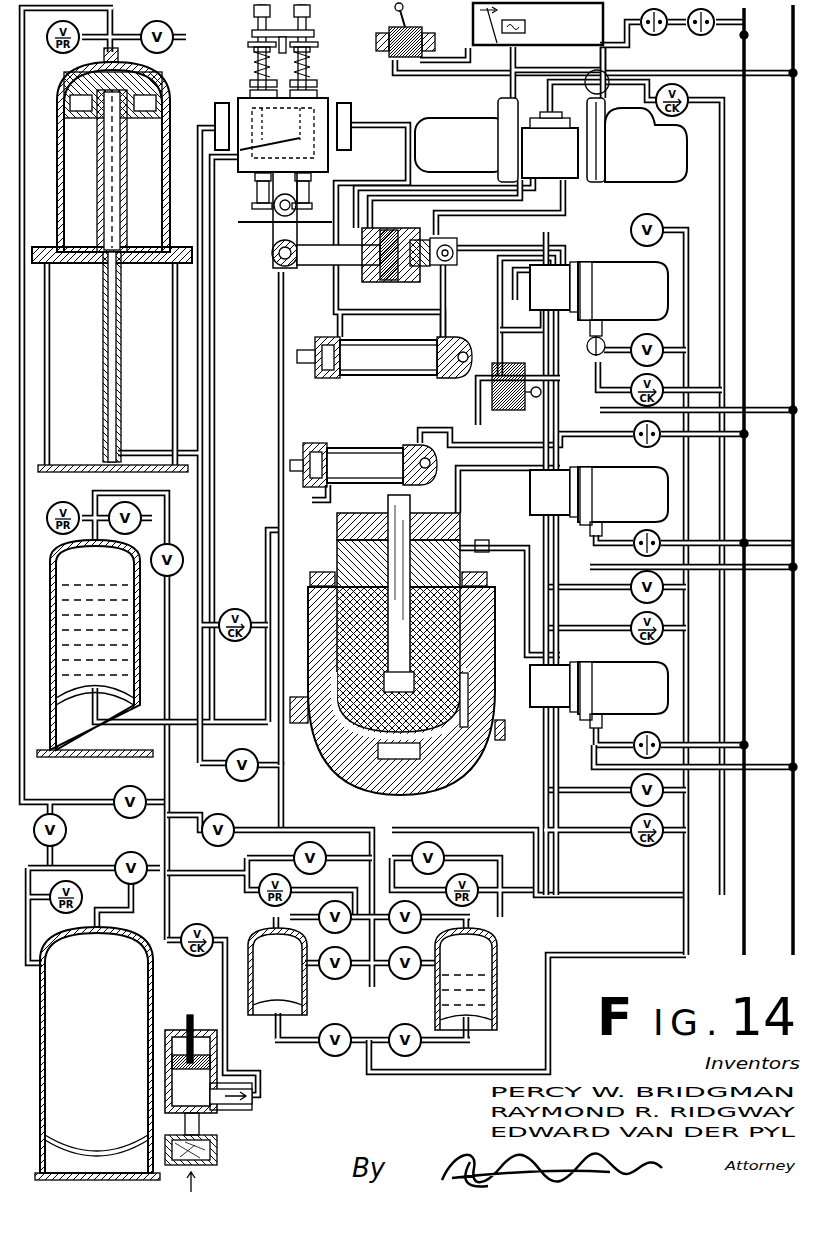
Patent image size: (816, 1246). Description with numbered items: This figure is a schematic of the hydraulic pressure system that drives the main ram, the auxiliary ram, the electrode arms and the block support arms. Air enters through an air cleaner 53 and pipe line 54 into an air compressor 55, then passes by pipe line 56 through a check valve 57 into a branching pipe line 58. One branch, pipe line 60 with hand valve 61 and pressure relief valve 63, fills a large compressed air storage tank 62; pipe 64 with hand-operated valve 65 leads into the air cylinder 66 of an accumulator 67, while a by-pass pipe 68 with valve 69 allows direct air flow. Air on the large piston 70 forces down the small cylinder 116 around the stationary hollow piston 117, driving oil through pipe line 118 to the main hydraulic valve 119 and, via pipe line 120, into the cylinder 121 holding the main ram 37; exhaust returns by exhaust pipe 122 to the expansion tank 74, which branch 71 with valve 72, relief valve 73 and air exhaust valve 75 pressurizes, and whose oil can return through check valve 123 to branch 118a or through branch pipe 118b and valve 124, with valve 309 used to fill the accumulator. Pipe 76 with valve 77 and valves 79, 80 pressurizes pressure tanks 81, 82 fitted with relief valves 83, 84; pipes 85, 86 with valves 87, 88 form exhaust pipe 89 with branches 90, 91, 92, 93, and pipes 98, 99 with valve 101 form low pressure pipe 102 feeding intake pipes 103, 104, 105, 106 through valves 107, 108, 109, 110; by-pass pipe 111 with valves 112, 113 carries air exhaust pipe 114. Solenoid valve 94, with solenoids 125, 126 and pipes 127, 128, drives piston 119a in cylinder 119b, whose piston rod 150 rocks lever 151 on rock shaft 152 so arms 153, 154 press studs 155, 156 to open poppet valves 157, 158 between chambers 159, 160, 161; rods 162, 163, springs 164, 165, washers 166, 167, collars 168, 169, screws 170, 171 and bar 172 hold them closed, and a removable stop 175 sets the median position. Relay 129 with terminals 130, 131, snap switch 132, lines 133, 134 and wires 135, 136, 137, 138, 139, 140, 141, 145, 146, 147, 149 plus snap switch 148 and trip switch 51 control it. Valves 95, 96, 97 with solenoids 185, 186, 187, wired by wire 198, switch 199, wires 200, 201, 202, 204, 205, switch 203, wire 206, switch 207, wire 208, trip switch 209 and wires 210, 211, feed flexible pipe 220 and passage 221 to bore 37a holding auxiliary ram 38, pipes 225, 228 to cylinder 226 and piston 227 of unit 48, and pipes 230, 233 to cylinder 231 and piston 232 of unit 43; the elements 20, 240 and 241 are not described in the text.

The press frame 20 is at (482, 780).
The main hydraulic ram 37 is at (342, 558).
The cylindrical bore 37a is at (335, 780).
The auxiliary ram 38 is at (408, 520).
The unit 43 is at (388, 372).
The unit 48 is at (355, 448).
The trip switch 51 is at (380, 87).
The air cleaner 53 is at (218, 1157).
The pipe line 54 is at (200, 1124).
The air compressor 55 is at (190, 1028).
The pipe line 56 is at (214, 1017).
The check valve 57 is at (188, 959).
The pipe line 58 is at (269, 866).
The pipe line 60 is at (83, 939).
The hand operated valve 61 is at (125, 876).
The compressed air storage tank 62 is at (118, 928).
The pressure relief valve 63 is at (54, 910).
The pipe 64 is at (116, 16).
The hand-operated valve 65 is at (65, 830).
The air cylinder 66 is at (58, 165).
The accumulator 67 is at (180, 384).
The by-pass pipe 68 is at (86, 777).
The hand-operated valve 69 is at (132, 792).
The piston 70 is at (66, 80).
The branch 71 is at (128, 710).
The hand-operated valve 72 is at (172, 577).
The pressure relief valve 73 is at (54, 277).
The expansion tank 74 is at (140, 650).
The air exhaust valve 75 is at (148, 507).
The pipe 76 is at (283, 859).
The hand-operated valve 77 is at (232, 829).
The hand-operated valve 79 is at (348, 876).
The hand-operated valve 80 is at (448, 890).
The pressure tank 81 is at (195, 914).
The pressure tank 82 is at (481, 979).
The pressure relief valve 83 is at (296, 890).
The pressure relief valve 84 is at (556, 878).
The pipe 85 is at (195, 879).
The pipe 86 is at (556, 918).
The hand-operated valve 87 is at (291, 858).
The hand-operated valve 88 is at (464, 879).
The pipe 89 is at (583, 488).
The exhaust outlet pipe 90 is at (615, 108).
The exhaust outlet pipe 91 is at (607, 563).
The exhaust outlet pipe 92 is at (623, 560).
The exhaust outlet pipe 93 is at (611, 346).
The solenoid operated valve 94 is at (551, 140).
The solenoid operated valve 95 is at (554, 687).
The solenoid operated valve 96 is at (554, 492).
The solenoid operated valve 97 is at (554, 287).
The pipe 98 is at (281, 1005).
The pipe 99 is at (512, 1040).
The hand-operated valve 101 is at (392, 1046).
The pipe 102 is at (525, 667).
The pressure intake pipe 103 is at (521, 207).
The pressure intake pipe 104 is at (490, 812).
The pressure intake pipe 105 is at (556, 606).
The pressure intake pipe 106 is at (580, 343).
The hand-operated valve 107 is at (663, 218).
The hand-operated valve 108 is at (615, 794).
The hand-operated valve 109 is at (615, 620).
The hand-operated valve 110 is at (652, 362).
The by-pass pipe 111 is at (372, 978).
The hand-operated valve 112 is at (326, 951).
The hand-operated valve 113 is at (401, 951).
The air exhaust pipe 114 is at (365, 1010).
The cylinder 116 is at (127, 170).
The hollow piston 117 is at (113, 362).
The pipe line 118 is at (199, 479).
The branch 118a is at (232, 550).
The branch pipe 118b is at (255, 724).
The main hydraulic valve 119 is at (340, 158).
The piston 119a is at (400, 285).
The cylinder 119b is at (355, 285).
The pipe line 120 is at (335, 434).
The cylinder 121 is at (497, 666).
The exhaust pipe 122 is at (166, 453).
The check valve 123 is at (231, 614).
The hand operated valve 124 is at (216, 773).
The solenoid 125 is at (461, 145).
The solenoid 126 is at (646, 145).
The pipe 127 is at (444, 210).
The pipe 128 is at (454, 211).
The relay 129 is at (521, 32).
The terminal 130 is at (538, 24).
The terminal 131 is at (419, 15).
The snap switch 132 is at (710, 72).
The A. C. line 133 is at (774, 480).
The A. C. line 134 is at (762, 479).
The wire 135 is at (707, 37).
The wire 136 is at (598, 34).
The wire 137 is at (462, 87).
The wire 138 is at (584, 56).
The wire 139 is at (553, 72).
The wire 140 is at (579, 79).
The wire 141 is at (762, 114).
The wire 145 is at (550, 56).
The wire 146 is at (418, 41).
The wire 147 is at (593, 72).
The snap switch 148 is at (662, 25).
The wire 149 is at (648, 56).
The piston rod 150 is at (236, 282).
The rock lever 151 is at (258, 220).
The rock shaft 152 is at (282, 160).
The arm 153 is at (266, 207).
The arm 154 is at (330, 205).
The adjustment stud 155 is at (276, 197).
The adjustment stud 156 is at (372, 176).
The poppet valve 157 is at (196, 126).
The poppet valve 158 is at (360, 126).
The chamber 159 is at (205, 155).
The chamber 160 is at (283, 135).
The chamber 161 is at (372, 146).
The rod 162 is at (236, 54).
The rod 163 is at (320, 54).
The spring 164 is at (236, 66).
The spring 165 is at (320, 66).
The washer 166 is at (239, 89).
The washer 167 is at (318, 89).
The collar 168 is at (239, 36).
The collar 169 is at (318, 36).
The adjustment screw 170 is at (238, 51).
The adjustment screw 171 is at (328, 13).
The stationary bar 172 is at (283, 51).
The removable stop 175 is at (259, 256).
The solenoid 185 is at (623, 695).
The solenoid 186 is at (623, 501).
The solenoid 187 is at (623, 299).
The wire 198 is at (760, 712).
The snap switch 199 is at (670, 731).
The wire 200 is at (679, 767).
The wire 201 is at (671, 744).
The wire 202 is at (760, 512).
The snap switch 203 is at (698, 515).
The wire 204 is at (676, 543).
The wire 205 is at (669, 568).
The wire 206 is at (760, 440).
The snap switch 207 is at (611, 438).
The wire 208 is at (526, 440).
The trip switch 209 is at (525, 394).
The wire 210 is at (523, 401).
The wire 211 is at (691, 404).
The flexible pipe 220 is at (521, 585).
The passage 221 is at (492, 633).
The pipe 225 is at (420, 490).
The cylinder 226 is at (372, 410).
The piston 227 is at (303, 453).
The pipe 228 is at (428, 442).
The pipe 230 is at (390, 324).
The cylinder 231 is at (448, 370).
The piston 232 is at (316, 370).
The pipe 233 is at (453, 307).
The pipe 240 is at (478, 506).
The top plate 241 is at (337, 522).
The valve 309 is at (169, 28).